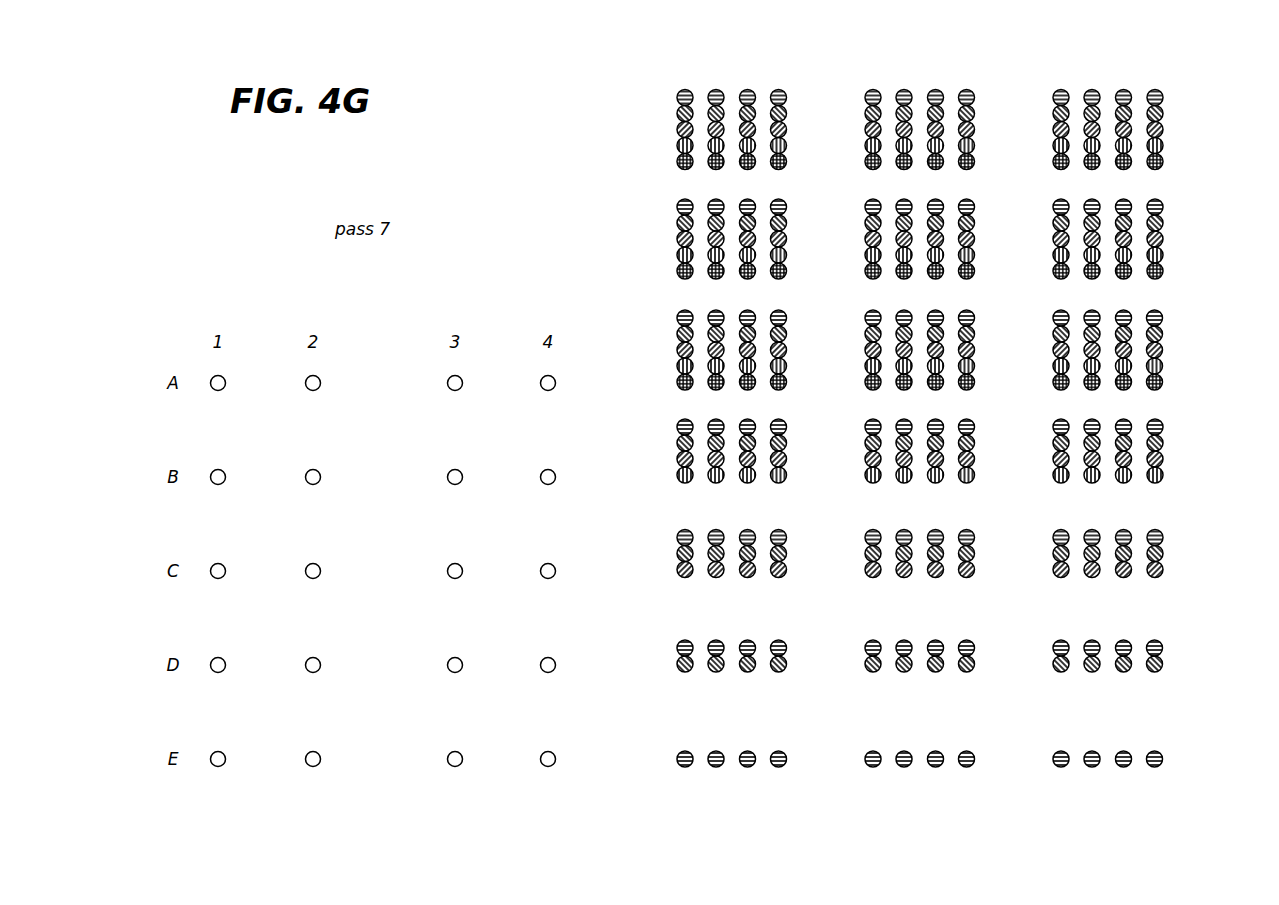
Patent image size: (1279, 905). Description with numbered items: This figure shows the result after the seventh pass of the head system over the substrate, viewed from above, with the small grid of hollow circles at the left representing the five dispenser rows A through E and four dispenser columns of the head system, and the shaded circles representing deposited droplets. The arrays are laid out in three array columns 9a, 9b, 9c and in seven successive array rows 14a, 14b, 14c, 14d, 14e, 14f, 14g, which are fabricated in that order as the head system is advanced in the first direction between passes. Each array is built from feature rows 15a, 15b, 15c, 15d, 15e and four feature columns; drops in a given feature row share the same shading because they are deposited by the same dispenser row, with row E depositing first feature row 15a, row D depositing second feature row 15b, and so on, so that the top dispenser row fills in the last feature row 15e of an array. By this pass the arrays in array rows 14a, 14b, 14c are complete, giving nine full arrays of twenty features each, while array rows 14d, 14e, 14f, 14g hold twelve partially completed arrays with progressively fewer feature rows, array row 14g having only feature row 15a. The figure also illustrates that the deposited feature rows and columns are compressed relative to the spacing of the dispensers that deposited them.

The array column 9a is at (730, 54).
The array column 9b is at (918, 54).
The array column 9c is at (1106, 54).
The array row 14a is at (658, 125).
The array row 14b is at (658, 235).
The array row 14c is at (1182, 348).
The array row 14d is at (1177, 493).
The array row 14e is at (1179, 587).
The array row 14f is at (1181, 673).
The array row 14g is at (1181, 776).
The feature row 15a is at (1163, 98).
The feature row 15b is at (1163, 114).
The feature row 15c is at (1163, 130).
The feature row 15d is at (1163, 146).
The feature row 15e is at (1163, 162).